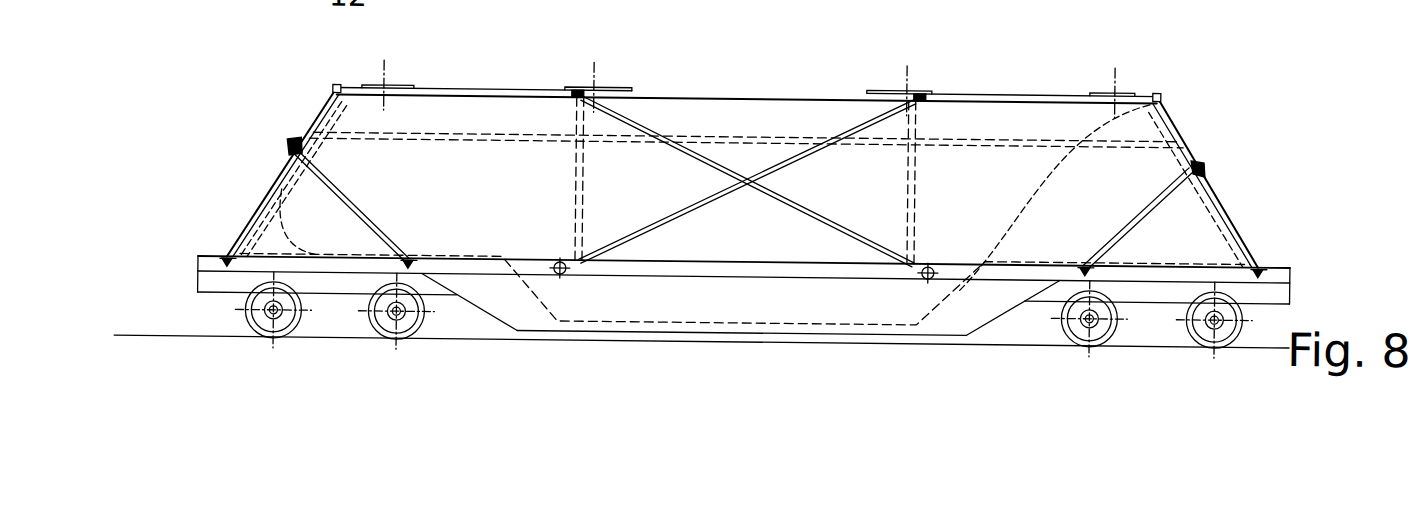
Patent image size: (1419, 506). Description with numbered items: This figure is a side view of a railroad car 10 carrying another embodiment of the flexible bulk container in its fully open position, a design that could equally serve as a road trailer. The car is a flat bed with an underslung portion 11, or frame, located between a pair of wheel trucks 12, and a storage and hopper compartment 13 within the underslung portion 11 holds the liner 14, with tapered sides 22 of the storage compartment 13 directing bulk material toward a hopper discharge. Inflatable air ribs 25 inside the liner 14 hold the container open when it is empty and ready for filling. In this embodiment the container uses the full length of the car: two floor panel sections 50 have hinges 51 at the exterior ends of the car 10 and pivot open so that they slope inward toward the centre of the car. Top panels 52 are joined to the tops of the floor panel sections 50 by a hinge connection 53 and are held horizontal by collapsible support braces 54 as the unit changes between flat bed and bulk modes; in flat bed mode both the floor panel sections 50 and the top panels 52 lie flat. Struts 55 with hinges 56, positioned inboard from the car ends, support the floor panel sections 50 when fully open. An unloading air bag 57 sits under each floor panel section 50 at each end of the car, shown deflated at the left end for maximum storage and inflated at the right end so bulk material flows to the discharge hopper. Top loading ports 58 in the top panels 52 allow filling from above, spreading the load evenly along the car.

The railroad car 10 is at (840, 63).
The underslung portion 11 is at (517, 313).
The wheel trucks 12 is at (262, 327).
The storage and hopper compartment 13 is at (779, 312).
The liner 14 is at (704, 114).
The tapered sides 22 is at (547, 305).
The inflatable air ribs 25 is at (498, 135).
The floor panel sections 50 is at (265, 200).
The hinges 51 is at (226, 255).
The top panels 52 is at (479, 89).
The hinge connection 53 is at (333, 87).
The collapsible support braces 54 is at (820, 139).
The struts 55 is at (357, 196).
The hinges 56 is at (410, 256).
The unloading air bag 57 is at (274, 241).
The top loading ports 58 is at (388, 83).